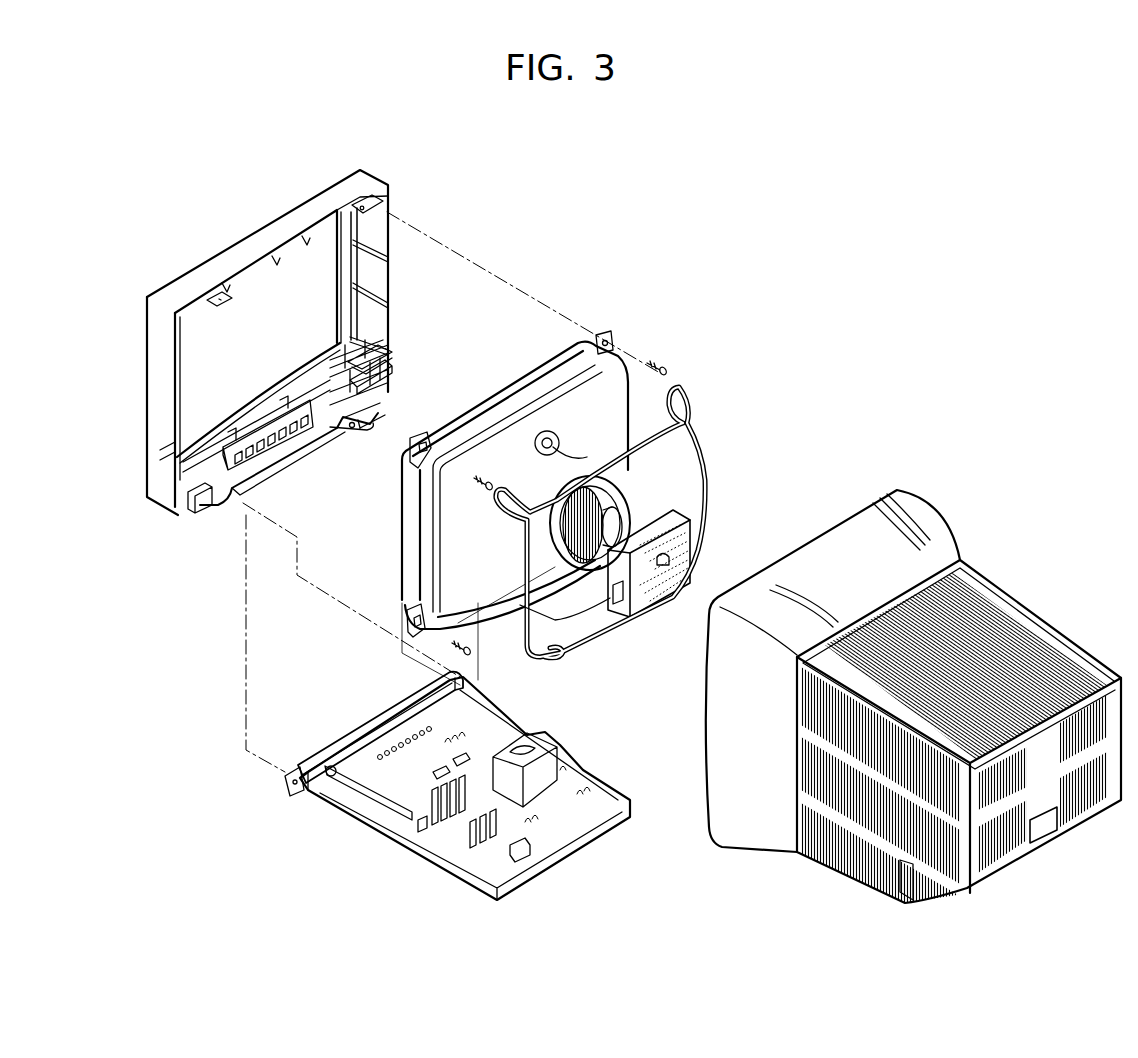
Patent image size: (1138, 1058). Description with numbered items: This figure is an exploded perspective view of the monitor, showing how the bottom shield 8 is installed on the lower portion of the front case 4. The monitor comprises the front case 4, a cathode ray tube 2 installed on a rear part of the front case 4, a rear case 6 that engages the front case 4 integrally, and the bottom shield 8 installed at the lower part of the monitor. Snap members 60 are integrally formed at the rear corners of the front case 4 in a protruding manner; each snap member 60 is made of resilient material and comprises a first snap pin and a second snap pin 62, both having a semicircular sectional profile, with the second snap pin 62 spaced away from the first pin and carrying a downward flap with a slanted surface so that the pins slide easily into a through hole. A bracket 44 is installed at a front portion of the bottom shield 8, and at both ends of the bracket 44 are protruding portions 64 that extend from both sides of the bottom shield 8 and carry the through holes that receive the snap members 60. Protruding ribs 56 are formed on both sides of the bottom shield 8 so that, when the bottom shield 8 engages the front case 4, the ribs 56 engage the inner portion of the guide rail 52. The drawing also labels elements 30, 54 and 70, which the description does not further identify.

The cathode ray tube 2 is at (520, 416).
The front case 4 is at (266, 232).
The rear case 6 is at (933, 517).
The bottom shield 8 is at (447, 808).
The printed circuit board 30 is at (485, 858).
The bracket 44 is at (353, 726).
The guide rail 52 is at (218, 515).
The support plate 54 is at (368, 425).
The protruding ribs 56 is at (338, 810).
The snap member 60 is at (205, 508).
The second snap pin 62 is at (380, 366).
The protruding portions 64 is at (296, 795).
The hook bracket 70 is at (388, 380).